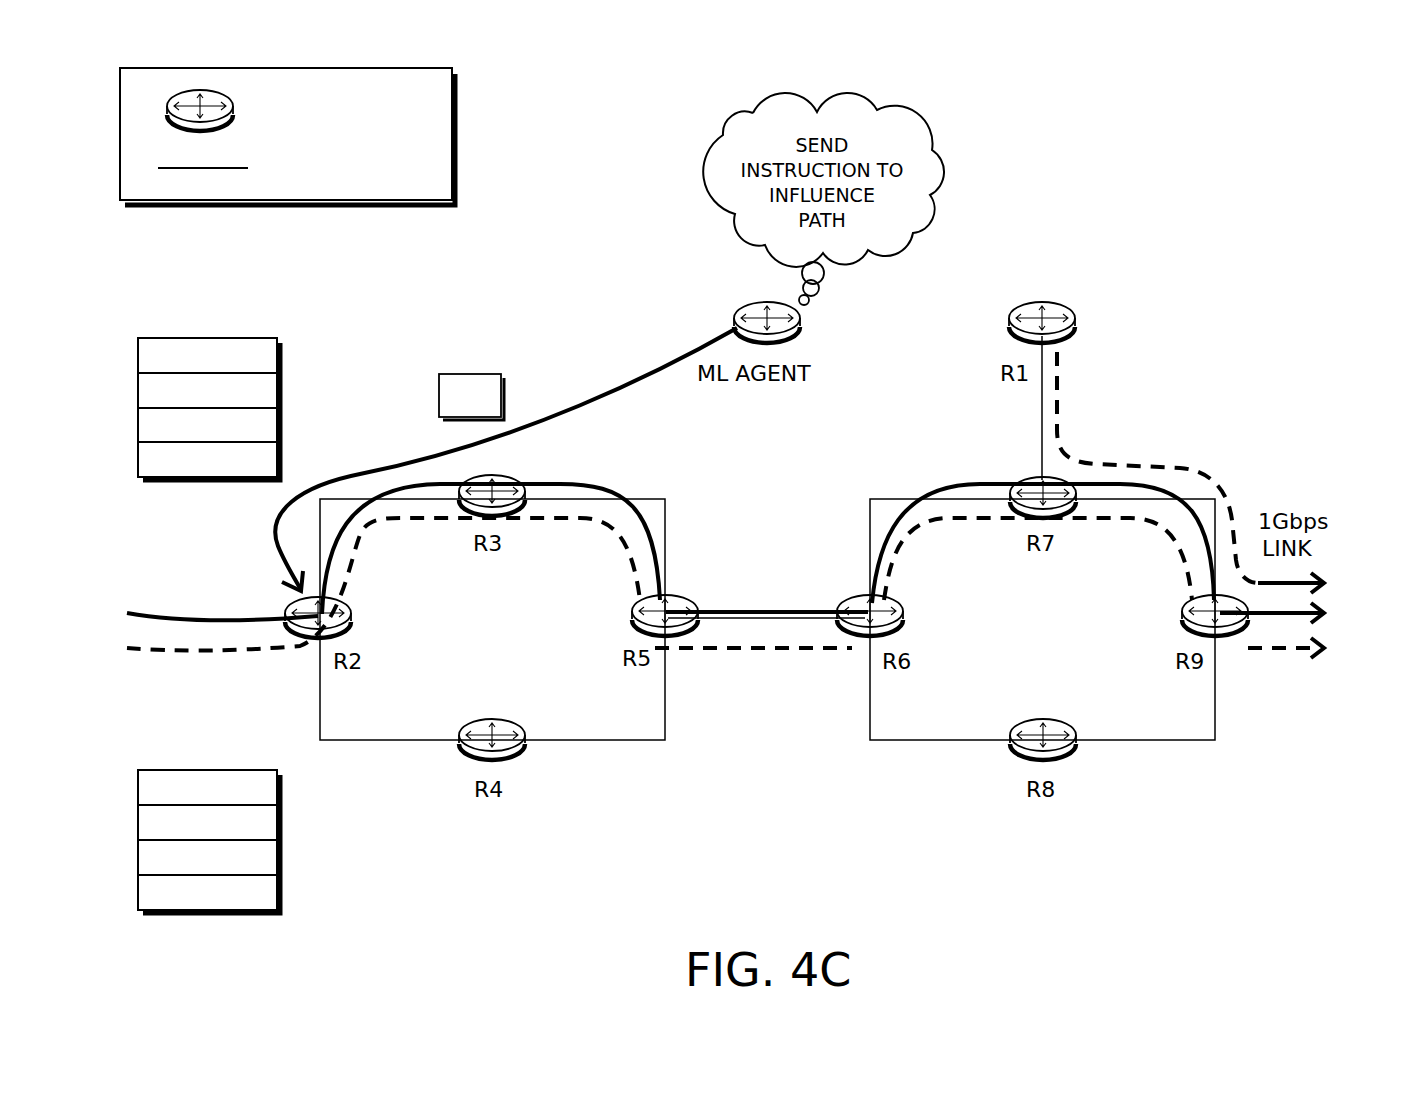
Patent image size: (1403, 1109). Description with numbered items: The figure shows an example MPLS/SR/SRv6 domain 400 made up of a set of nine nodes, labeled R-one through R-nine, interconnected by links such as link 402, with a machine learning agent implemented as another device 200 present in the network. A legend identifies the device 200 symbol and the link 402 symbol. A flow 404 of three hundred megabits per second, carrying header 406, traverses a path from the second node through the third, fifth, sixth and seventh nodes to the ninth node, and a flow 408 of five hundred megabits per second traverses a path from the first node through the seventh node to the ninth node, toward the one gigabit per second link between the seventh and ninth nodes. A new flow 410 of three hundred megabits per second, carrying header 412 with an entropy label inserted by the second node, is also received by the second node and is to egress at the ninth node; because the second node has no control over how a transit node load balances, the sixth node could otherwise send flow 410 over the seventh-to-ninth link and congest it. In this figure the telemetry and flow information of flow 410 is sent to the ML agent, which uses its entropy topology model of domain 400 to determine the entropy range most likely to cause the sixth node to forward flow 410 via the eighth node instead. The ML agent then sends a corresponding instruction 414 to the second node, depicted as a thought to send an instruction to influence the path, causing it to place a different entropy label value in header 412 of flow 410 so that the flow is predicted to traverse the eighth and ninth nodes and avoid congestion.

The device 200 is at (289, 110).
The link 402 is at (268, 169).
The MPLS/SR/SRv6 domain 400 is at (1304, 130).
The flow 404 is at (140, 607).
The header 406 is at (251, 321).
The flow 408 is at (1068, 402).
The flow 410 is at (145, 656).
The header 412 is at (254, 923).
The instruction 414 is at (454, 407).